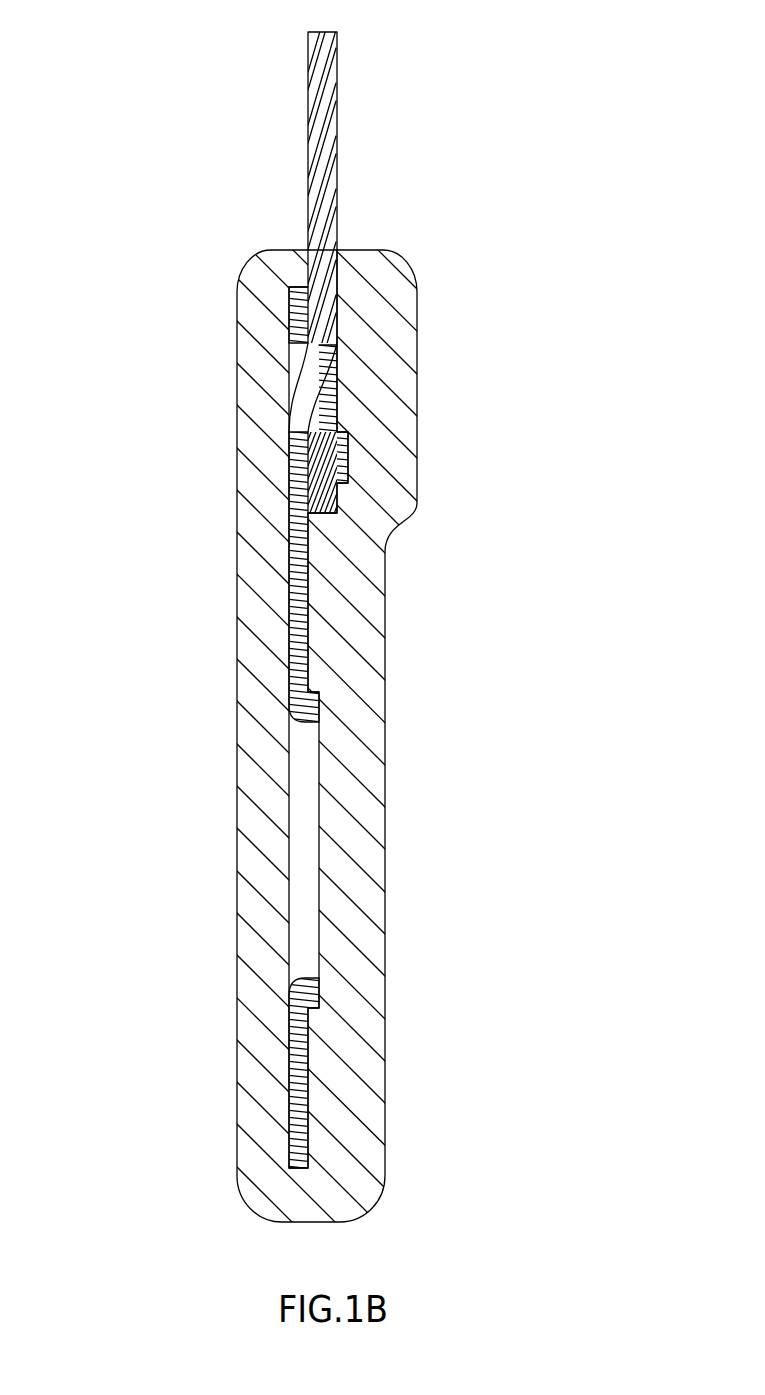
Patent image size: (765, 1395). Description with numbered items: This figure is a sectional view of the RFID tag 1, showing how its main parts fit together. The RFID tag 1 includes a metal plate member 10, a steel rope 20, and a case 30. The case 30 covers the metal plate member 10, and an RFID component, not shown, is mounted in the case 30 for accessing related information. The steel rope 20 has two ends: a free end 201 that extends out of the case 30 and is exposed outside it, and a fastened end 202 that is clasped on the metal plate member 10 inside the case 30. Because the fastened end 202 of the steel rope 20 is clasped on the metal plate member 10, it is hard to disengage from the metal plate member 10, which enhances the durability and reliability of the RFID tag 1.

The RFID tag 1 is at (110, 193).
The metal plate member 10 is at (287, 615).
The steel rope 20 is at (353, 195).
The free end 201 is at (330, 72).
The fastened end 202 is at (322, 473).
The case 30 is at (249, 357).